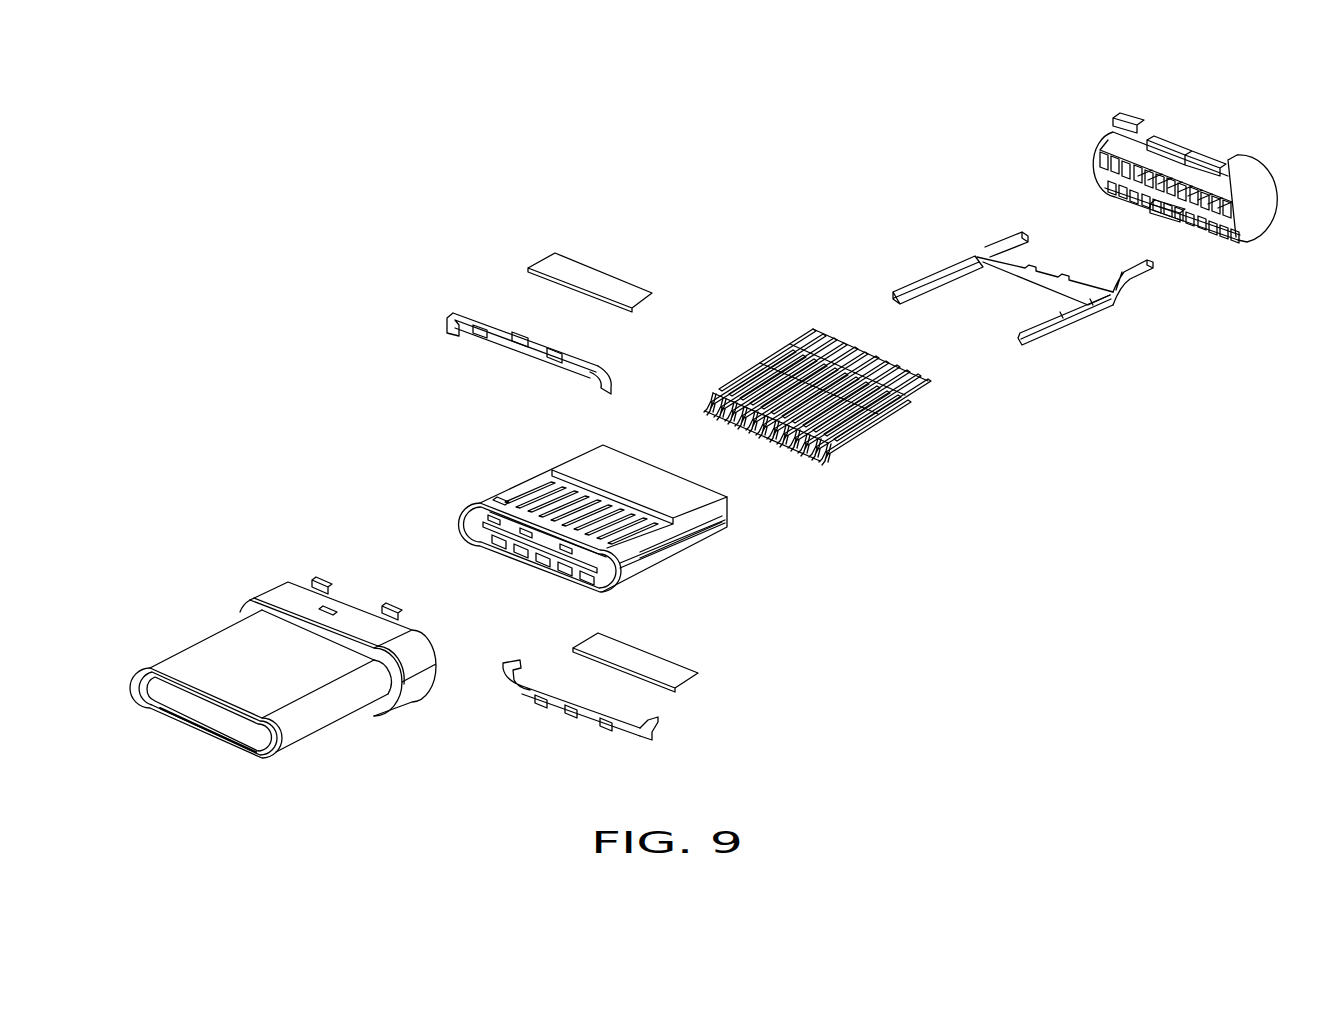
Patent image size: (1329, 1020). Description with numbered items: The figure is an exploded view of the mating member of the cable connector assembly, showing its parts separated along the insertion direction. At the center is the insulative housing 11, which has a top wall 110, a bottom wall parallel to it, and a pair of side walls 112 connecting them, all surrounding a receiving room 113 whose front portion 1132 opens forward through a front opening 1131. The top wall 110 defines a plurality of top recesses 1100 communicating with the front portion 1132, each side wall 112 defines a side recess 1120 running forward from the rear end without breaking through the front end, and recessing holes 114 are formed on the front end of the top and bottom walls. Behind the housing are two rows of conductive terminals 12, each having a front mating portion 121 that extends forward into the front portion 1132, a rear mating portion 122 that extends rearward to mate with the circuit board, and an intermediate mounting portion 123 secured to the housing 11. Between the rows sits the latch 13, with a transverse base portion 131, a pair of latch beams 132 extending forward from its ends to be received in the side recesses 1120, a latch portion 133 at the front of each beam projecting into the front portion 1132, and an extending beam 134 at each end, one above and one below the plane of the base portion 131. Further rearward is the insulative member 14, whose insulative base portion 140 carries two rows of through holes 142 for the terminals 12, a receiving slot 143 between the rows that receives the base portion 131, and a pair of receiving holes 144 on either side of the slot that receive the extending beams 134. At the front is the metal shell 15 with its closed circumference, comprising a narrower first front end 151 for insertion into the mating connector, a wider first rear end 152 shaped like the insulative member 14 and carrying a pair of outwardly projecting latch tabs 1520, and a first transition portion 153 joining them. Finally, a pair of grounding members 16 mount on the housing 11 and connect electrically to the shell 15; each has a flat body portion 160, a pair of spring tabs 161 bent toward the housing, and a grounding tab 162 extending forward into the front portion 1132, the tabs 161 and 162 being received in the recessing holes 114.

The insulative housing 11 is at (592, 529).
The top wall 110 is at (628, 470).
The top recesses 1100 is at (535, 490).
The side walls 112 is at (620, 570).
The receiving room 113 is at (565, 567).
The front opening 1131 is at (523, 553).
The front portion 1132 is at (470, 537).
The recessing holes 114 is at (497, 500).
The side recess 1120 is at (700, 527).
The conductive terminals 12 is at (865, 408).
The front mating portion 121 is at (820, 455).
The rear mating portion 122 is at (930, 397).
The intermediate mounting portion 123 is at (870, 437).
The latch 13 is at (1028, 291).
The base portion 131 is at (1038, 273).
The latch beams 132 is at (1070, 315).
The latch portion 133 is at (1020, 338).
The extending beam 134 is at (1132, 290).
The insulative member 14 is at (1151, 193).
The insulative base portion 140 is at (1205, 155).
The through holes 142 is at (1250, 215).
The receiving slot 143 is at (1173, 220).
The receiving holes 144 is at (1100, 160).
The metal shell 15 is at (313, 662).
The first front end 151 is at (315, 720).
The first rear end 152 is at (430, 665).
The first transition portion 153 is at (388, 700).
The latch tabs 1520 is at (322, 578).
The grounding members 16 is at (516, 334).
The flat body portion 160 is at (515, 318).
The spring tabs 161 is at (475, 338).
The grounding tab 162 is at (517, 345).